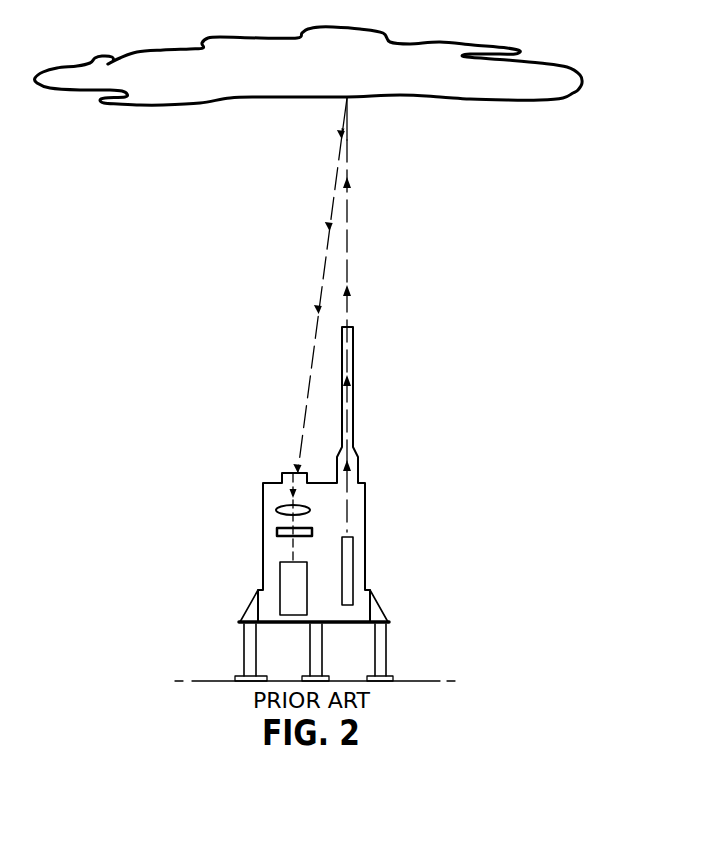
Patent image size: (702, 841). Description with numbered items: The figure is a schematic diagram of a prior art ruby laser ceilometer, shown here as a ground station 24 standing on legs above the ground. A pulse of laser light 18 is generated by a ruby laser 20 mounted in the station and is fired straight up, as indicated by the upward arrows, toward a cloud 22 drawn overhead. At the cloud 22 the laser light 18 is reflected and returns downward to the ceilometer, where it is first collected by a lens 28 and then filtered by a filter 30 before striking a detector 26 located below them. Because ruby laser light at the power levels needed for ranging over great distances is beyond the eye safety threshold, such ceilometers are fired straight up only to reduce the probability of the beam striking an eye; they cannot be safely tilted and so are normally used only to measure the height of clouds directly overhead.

The laser light 18 is at (308, 387).
The ruby laser 20 is at (353, 567).
The cloud 22 is at (543, 102).
The ground station 24 is at (259, 550).
The detector 26 is at (288, 583).
The lens 28 is at (287, 506).
The filter 30 is at (278, 530).